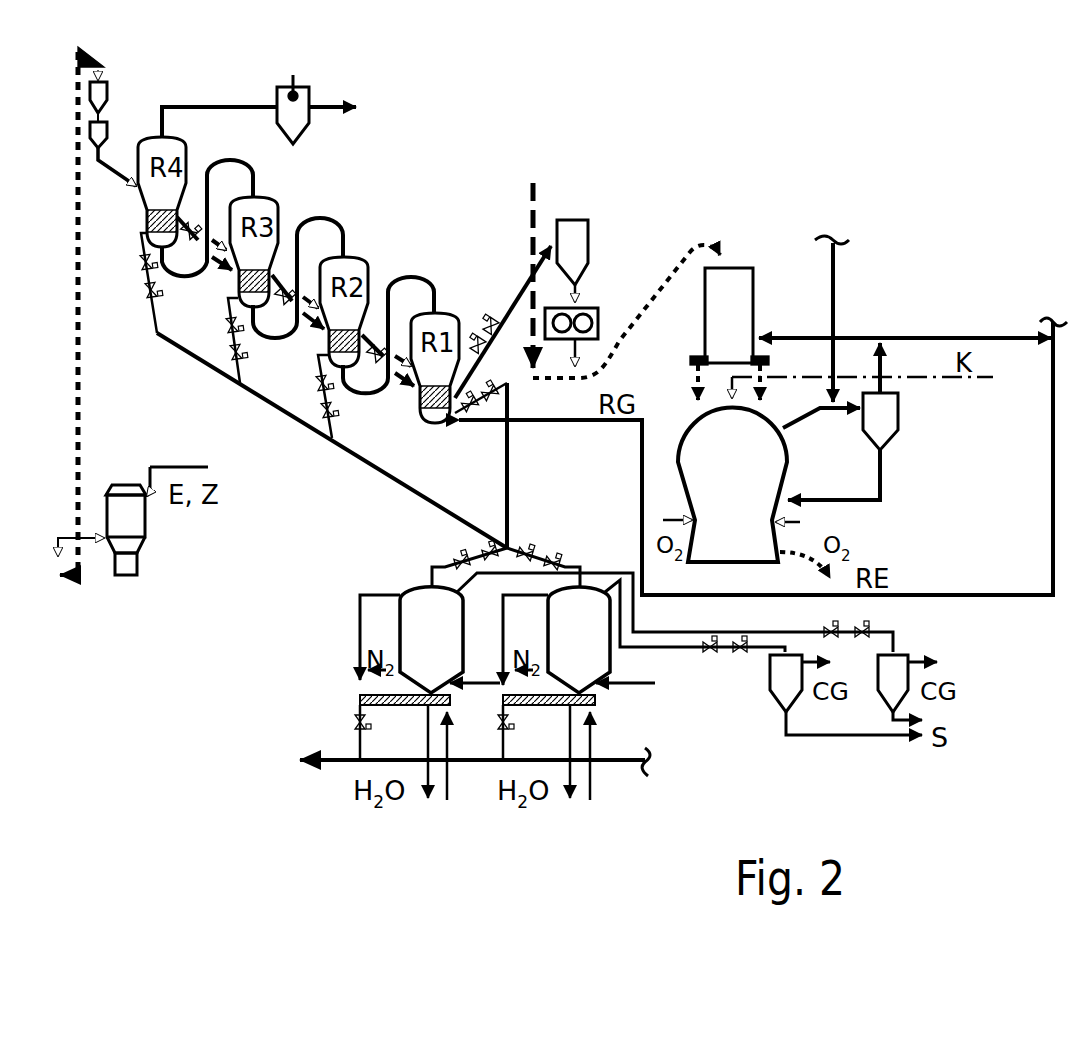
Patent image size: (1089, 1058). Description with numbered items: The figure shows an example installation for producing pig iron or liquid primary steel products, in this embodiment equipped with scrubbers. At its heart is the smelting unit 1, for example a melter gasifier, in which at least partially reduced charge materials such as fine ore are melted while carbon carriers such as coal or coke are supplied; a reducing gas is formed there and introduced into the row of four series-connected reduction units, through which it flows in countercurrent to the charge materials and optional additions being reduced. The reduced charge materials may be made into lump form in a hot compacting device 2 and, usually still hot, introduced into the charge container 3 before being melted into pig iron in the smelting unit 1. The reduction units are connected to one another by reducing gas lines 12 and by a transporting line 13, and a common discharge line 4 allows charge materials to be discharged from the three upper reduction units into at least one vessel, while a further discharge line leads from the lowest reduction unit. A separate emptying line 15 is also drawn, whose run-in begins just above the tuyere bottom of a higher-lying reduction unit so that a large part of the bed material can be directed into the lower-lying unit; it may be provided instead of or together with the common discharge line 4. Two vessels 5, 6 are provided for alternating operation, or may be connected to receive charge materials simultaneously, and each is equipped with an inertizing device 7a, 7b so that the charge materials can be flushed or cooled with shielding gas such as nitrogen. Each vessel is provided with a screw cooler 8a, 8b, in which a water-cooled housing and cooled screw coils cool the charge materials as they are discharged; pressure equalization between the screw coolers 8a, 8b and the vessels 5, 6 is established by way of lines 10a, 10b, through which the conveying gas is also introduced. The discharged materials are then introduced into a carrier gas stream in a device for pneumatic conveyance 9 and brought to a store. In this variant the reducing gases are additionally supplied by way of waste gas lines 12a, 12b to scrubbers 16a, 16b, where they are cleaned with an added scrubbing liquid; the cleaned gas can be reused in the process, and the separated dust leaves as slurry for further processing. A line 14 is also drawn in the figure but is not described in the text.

The smelting unit 1 is at (718, 488).
The hot compacting device 2 is at (590, 296).
The charge container 3 is at (575, 232).
The common discharge line 4 is at (396, 480).
The vessel 5 is at (431, 640).
The vessel 6 is at (579, 640).
The inertizing device 7a is at (476, 679).
The inertizing device 7b is at (626, 675).
The screw cooler 8a is at (357, 700).
The screw cooler 8b is at (593, 700).
The device for pneumatic conveyance 9 is at (338, 760).
The line 10a is at (358, 610).
The line 10b is at (503, 615).
The reducing gas line 12 is at (343, 229).
The waste gas line 12a is at (667, 647).
The waste gas line 12b is at (898, 643).
The transporting line 13 is at (278, 270).
The reduction gas line 14 is at (507, 437).
The separate emptying line 15 is at (216, 270).
The scrubber 16a is at (785, 697).
The scrubber 16b is at (890, 688).